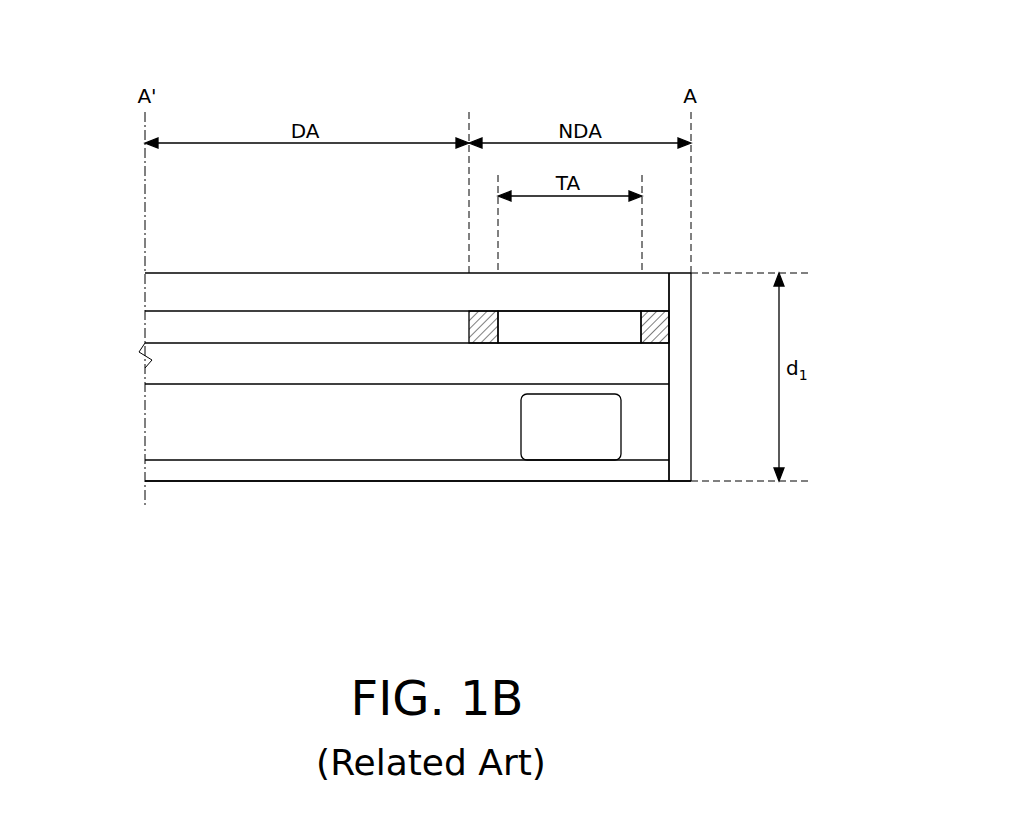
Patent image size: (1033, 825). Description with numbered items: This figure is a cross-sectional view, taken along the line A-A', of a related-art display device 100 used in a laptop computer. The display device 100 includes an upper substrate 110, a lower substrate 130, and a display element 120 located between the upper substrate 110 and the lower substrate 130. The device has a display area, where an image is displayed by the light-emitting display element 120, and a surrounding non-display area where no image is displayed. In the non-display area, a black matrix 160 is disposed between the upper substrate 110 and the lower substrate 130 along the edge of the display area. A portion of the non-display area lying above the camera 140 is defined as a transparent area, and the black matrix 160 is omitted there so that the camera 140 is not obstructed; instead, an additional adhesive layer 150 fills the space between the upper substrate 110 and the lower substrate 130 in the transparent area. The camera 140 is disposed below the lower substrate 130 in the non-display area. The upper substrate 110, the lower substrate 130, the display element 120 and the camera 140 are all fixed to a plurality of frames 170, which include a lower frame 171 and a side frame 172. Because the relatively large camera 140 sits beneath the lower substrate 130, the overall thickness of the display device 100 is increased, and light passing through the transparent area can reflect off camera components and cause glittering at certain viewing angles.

The display device 100 is at (738, 43).
The upper substrate 110 is at (165, 286).
The display element 120 is at (165, 319).
The lower substrate 130 is at (165, 357).
The camera 140 is at (598, 432).
The adhesive layer 150 is at (614, 326).
The black matrix 160 is at (482, 325).
The frames 170 is at (675, 538).
The lower frame 171 is at (604, 468).
The side frame 172 is at (683, 468).